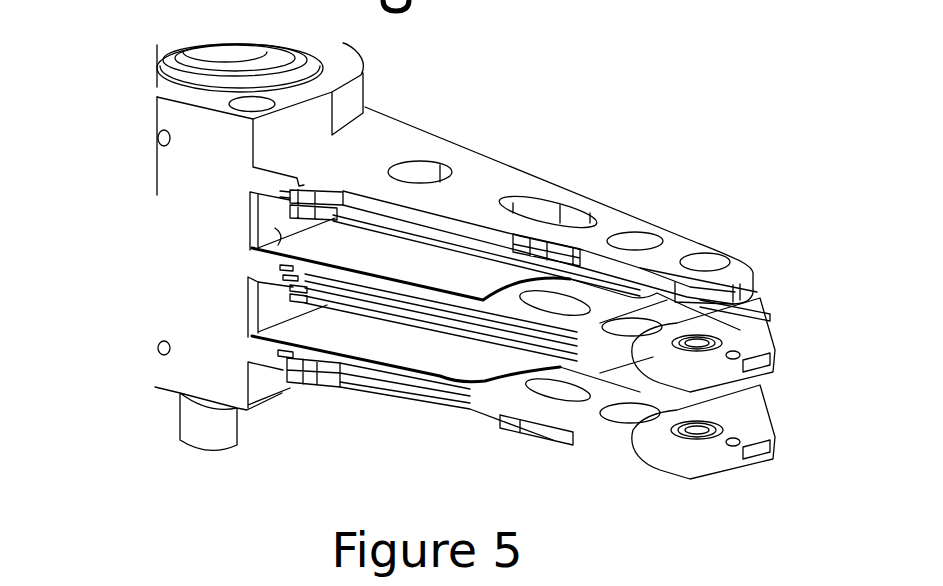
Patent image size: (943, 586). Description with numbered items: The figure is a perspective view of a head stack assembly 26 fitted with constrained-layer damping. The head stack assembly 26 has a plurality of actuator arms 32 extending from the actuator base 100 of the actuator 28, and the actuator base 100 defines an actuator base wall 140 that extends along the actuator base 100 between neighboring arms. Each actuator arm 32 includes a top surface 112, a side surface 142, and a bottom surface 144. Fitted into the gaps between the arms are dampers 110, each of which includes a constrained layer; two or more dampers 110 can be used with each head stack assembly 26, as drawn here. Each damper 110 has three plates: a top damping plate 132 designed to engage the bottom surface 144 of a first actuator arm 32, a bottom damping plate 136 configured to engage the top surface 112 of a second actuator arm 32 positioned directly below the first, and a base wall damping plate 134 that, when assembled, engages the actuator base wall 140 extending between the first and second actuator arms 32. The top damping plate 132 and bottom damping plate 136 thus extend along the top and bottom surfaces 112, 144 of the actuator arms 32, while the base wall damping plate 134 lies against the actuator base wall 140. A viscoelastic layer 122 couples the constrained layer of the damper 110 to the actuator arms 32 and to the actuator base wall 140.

The head stack assembly 26 is at (127, 51).
The actuator 28 is at (188, 355).
The actuator arms 32 is at (699, 213).
The actuator base 100 is at (365, 108).
The damper 110 is at (383, 281).
The top surface 112 is at (487, 170).
The viscoelastic layer 122 is at (307, 268).
The top damping plate 132 is at (489, 281).
The base wall damping plate 134 is at (253, 252).
The bottom damping plate 136 is at (442, 268).
The actuator base wall 140 is at (257, 213).
The side surface 142 is at (693, 287).
The bottom surface 144 is at (628, 302).